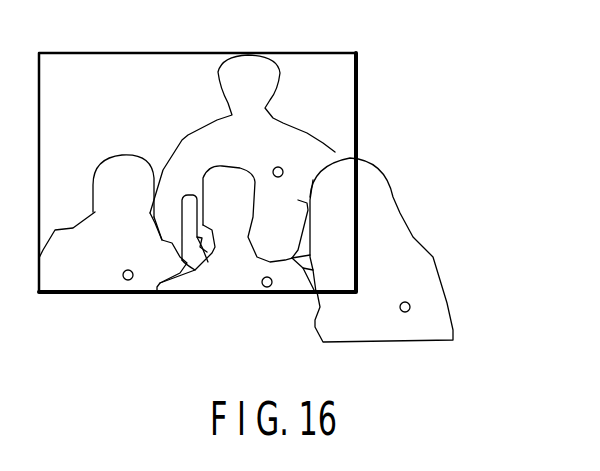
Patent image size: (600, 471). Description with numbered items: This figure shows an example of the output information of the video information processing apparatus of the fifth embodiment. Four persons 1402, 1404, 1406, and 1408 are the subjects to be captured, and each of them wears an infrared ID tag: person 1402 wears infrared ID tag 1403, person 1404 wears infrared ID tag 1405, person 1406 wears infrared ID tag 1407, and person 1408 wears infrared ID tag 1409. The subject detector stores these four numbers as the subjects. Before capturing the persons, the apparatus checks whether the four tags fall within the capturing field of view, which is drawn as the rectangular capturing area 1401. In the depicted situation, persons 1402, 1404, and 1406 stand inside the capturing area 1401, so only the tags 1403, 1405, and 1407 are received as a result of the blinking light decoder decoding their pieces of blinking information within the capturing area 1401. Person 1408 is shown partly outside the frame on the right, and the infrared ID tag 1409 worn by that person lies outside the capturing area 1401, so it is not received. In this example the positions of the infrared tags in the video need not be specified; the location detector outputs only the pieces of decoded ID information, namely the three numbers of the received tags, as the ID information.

The capturing area 1401 is at (358, 65).
The person 1402 is at (270, 60).
The infrared ID tag 1403 is at (283, 168).
The person 1404 is at (62, 282).
The infrared ID tag 1405 is at (128, 280).
The person 1406 is at (210, 280).
The infrared ID tag 1407 is at (268, 287).
The person 1408 is at (400, 217).
The infrared ID tag 1409 is at (410, 303).